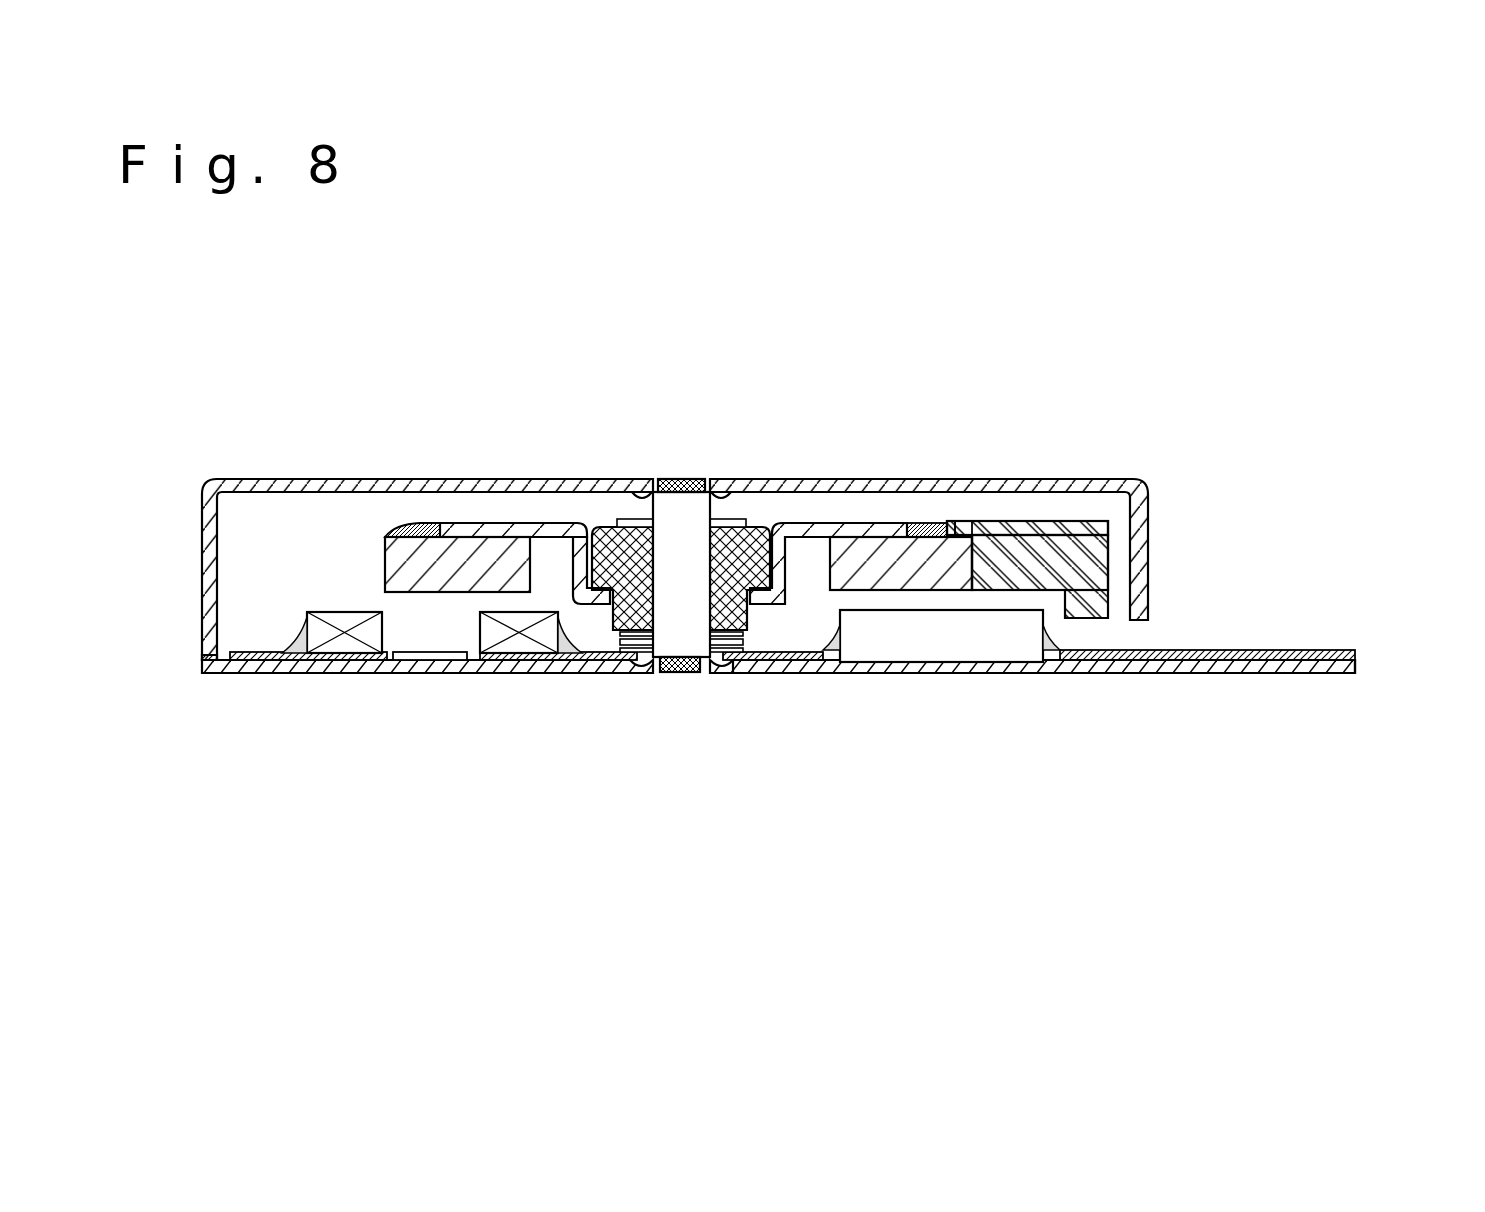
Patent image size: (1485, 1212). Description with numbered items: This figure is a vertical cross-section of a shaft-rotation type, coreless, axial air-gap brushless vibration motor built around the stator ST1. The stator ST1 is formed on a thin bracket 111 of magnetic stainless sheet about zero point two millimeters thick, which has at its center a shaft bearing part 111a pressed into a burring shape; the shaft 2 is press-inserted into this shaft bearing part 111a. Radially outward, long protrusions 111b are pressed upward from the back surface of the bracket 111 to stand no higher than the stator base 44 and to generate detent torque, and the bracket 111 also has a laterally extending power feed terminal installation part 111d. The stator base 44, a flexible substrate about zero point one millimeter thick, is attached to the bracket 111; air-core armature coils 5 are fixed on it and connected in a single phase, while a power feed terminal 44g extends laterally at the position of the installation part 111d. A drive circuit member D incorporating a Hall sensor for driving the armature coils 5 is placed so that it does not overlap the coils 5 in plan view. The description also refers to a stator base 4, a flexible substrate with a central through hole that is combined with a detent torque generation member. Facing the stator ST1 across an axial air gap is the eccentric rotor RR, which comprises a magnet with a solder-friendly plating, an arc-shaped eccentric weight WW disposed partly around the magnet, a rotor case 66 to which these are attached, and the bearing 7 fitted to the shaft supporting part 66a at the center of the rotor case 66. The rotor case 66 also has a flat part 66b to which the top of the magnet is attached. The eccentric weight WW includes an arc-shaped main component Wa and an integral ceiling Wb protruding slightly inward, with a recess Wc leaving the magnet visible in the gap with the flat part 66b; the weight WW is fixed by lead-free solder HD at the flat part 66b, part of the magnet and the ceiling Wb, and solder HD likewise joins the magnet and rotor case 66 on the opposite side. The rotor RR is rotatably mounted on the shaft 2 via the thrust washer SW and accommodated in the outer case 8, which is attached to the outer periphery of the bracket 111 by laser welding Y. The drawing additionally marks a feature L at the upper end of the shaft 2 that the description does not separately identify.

The outer case 8 is at (355, 478).
The lead free solder HD is at (425, 522).
The rotor case 66 is at (497, 523).
The bearing 7 is at (592, 525).
The shaft supporting part 66a is at (800, 555).
The flat part 66b is at (850, 520).
The shaft end cap L is at (688, 478).
The recess Wc is at (953, 523).
The ceiling Wb is at (962, 530).
The eccentric rotor RR is at (1033, 508).
The eccentric weight WW is at (1077, 508).
The arc-shaped main component Wa is at (1057, 568).
The power feed terminal 44g is at (1305, 642).
The laser welding Y is at (200, 657).
The stator base 44 is at (278, 650).
The long protrusions 111b is at (430, 650).
The thin bracket 111 is at (458, 667).
The air-core armature coils 5 is at (517, 642).
The thrust washer SW is at (641, 652).
The shaft 2 is at (673, 623).
The shaft bearing part 111a is at (723, 660).
The stator ST1 is at (795, 690).
The stator base 4 is at (891, 575).
The drive circuit member D is at (990, 640).
The power feed terminal installation part 111d is at (1265, 673).